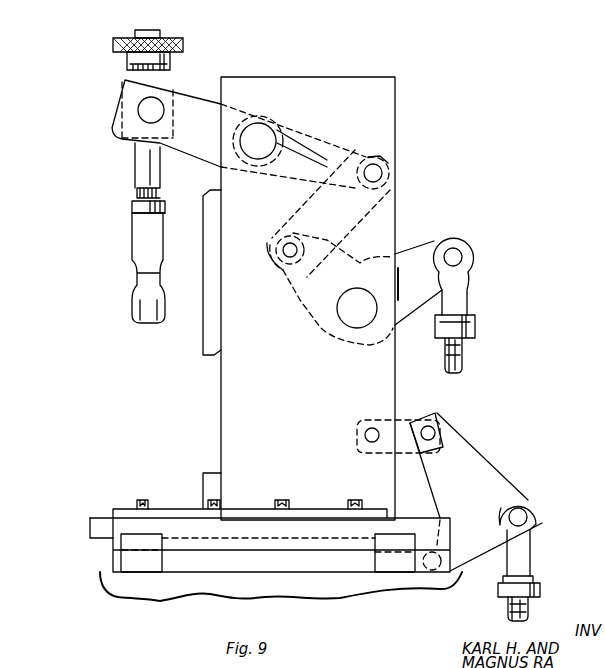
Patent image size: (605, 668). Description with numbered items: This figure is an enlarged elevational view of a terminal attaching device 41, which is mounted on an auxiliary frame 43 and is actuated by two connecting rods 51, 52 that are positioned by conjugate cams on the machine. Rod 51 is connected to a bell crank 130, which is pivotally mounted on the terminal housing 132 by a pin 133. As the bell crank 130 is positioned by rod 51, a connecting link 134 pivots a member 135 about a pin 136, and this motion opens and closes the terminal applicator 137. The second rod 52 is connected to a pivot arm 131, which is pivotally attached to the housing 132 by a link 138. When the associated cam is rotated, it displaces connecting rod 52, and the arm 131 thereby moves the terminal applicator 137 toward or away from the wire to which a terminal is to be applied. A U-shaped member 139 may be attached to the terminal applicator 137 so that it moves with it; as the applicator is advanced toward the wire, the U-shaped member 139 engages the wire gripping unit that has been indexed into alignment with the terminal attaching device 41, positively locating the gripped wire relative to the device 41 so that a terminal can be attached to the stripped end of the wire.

The terminal attaching device 41 is at (386, 123).
The auxiliary frame 43 is at (153, 590).
The connecting rod 51 is at (458, 345).
The connecting rod 52 is at (531, 609).
The bell crank 130 is at (412, 265).
The pivot arm 131 is at (468, 477).
The terminal housing 132 is at (372, 137).
The pin 133 is at (355, 318).
The connecting link 134 is at (318, 218).
The member 135 is at (185, 107).
The pin 136 is at (258, 138).
The terminal applicator 137 is at (119, 206).
The link 138 is at (402, 425).
The U-shaped member 139 is at (97, 530).